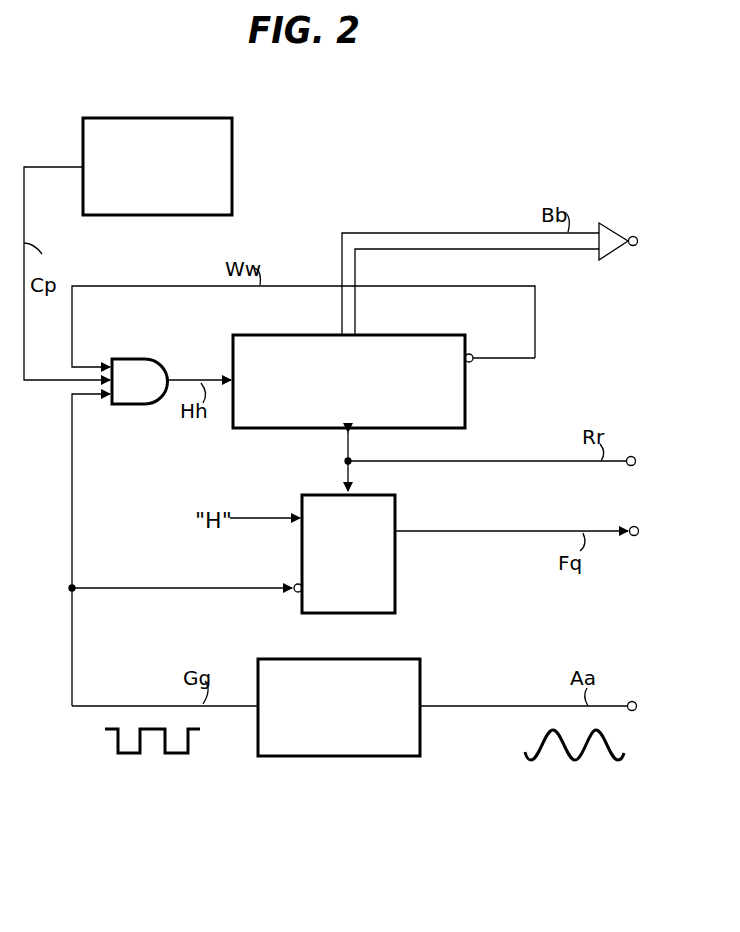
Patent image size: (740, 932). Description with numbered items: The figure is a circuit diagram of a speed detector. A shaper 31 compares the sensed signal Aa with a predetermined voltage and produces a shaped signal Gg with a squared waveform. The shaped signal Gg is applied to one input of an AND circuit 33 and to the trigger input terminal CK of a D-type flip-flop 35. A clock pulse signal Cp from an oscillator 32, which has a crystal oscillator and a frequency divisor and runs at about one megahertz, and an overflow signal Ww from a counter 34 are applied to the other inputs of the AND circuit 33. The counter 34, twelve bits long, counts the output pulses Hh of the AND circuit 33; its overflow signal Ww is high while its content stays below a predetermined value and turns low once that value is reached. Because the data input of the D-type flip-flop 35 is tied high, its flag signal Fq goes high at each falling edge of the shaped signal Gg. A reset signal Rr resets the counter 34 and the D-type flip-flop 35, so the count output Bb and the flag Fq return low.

The shaper 31 is at (408, 756).
The oscillator 32 is at (238, 99).
The AND circuit 33 is at (158, 371).
The counter 34 is at (465, 420).
The D-type flip-flop 35 is at (395, 601).